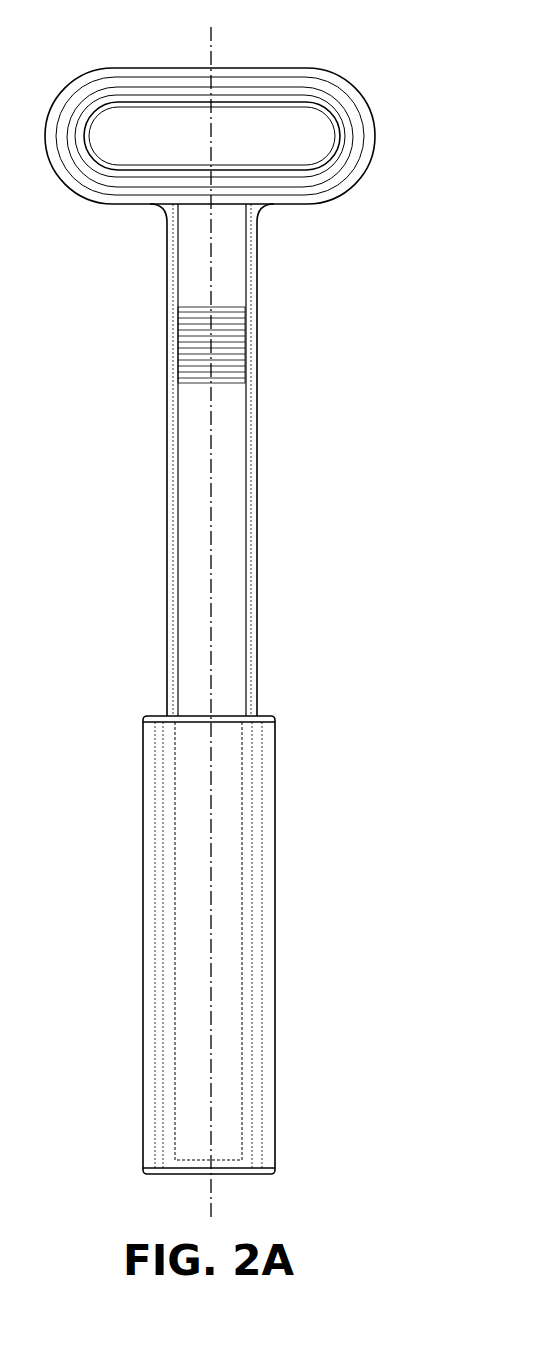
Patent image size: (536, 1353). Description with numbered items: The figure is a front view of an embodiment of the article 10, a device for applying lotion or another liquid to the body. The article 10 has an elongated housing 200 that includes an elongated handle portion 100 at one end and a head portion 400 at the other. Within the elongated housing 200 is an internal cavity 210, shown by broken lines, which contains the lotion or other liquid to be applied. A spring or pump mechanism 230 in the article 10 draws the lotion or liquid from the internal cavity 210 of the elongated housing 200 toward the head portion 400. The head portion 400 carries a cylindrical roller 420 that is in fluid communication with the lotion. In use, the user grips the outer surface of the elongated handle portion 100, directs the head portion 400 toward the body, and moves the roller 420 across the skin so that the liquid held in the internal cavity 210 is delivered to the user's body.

The article 10 is at (361, 366).
The elongated handle portion 100 is at (277, 802).
The elongated housing 200 is at (254, 562).
The internal cavity 210 is at (222, 486).
The spring or pump mechanism 230 is at (178, 377).
The head portion 400 is at (403, 131).
The cylindrical roller 420 is at (282, 104).